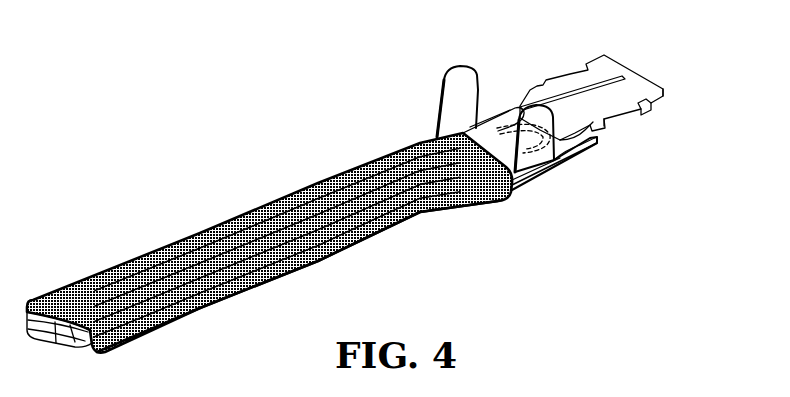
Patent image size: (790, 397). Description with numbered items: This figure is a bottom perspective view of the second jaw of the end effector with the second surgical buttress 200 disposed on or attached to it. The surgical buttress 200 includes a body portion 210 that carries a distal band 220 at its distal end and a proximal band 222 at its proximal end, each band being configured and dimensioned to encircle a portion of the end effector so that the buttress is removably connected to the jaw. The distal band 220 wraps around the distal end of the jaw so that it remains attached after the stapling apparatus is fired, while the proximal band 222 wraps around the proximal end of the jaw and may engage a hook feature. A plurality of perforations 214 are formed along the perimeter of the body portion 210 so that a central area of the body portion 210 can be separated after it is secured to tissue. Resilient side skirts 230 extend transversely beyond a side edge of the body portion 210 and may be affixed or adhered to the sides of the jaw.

The second surgical buttress 200 is at (345, 209).
The body portion 210 is at (325, 248).
The perforations 214 is at (318, 181).
The distal band 220 is at (88, 356).
The proximal band 222 is at (496, 114).
The side skirts 230 is at (503, 197).